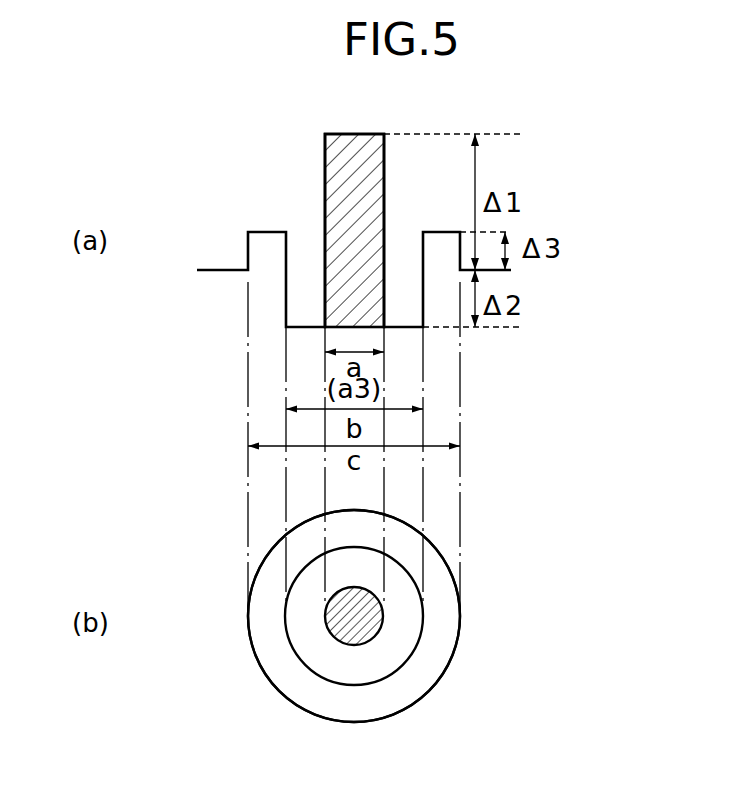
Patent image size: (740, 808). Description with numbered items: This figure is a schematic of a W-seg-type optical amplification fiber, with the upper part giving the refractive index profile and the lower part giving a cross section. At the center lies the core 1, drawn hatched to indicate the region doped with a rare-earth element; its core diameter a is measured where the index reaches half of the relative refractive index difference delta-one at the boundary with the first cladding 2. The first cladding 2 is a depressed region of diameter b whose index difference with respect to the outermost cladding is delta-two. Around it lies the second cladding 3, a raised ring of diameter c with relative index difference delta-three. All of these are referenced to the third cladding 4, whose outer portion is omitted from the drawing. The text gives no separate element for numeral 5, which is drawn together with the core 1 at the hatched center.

The core 1 is at (373, 607).
The first cladding 2 is at (393, 632).
The second cladding 3 is at (422, 667).
The third cladding 4 is at (253, 678).
The center core portion 5 is at (373, 607).